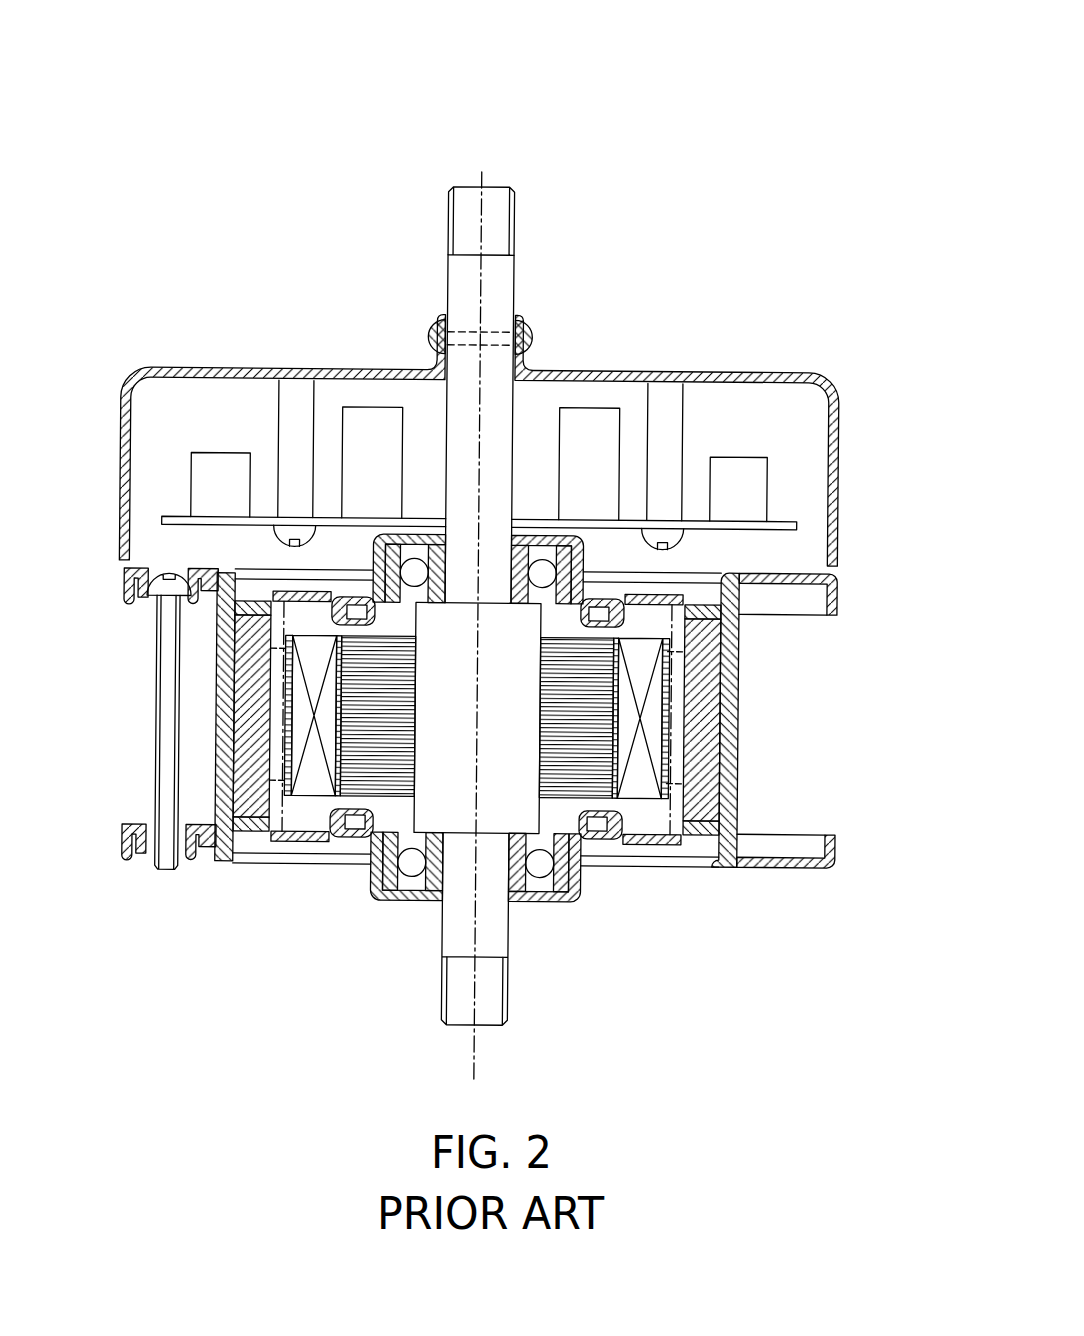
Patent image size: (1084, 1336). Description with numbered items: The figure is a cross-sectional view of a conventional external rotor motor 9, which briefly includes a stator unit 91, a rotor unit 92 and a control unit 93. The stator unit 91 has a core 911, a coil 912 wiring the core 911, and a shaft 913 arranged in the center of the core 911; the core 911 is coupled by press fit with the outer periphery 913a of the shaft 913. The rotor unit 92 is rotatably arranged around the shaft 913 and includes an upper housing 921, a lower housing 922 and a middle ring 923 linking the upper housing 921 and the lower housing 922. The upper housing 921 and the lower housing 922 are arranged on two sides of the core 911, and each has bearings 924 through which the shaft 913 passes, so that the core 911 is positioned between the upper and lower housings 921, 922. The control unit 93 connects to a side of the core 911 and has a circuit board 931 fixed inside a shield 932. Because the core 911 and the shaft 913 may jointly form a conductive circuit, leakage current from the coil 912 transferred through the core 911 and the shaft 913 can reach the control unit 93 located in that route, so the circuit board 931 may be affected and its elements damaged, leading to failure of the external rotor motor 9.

The external rotor motor 9 is at (243, 85).
The stator unit 91 is at (422, 164).
The shaft 913 is at (511, 213).
The outer periphery of the shaft 913a is at (410, 760).
The rotor unit 92 is at (204, 913).
The upper housing 921 is at (827, 577).
The lower housing 922 is at (797, 862).
The middle ring 923 is at (728, 731).
The bearings 924 is at (565, 548).
The core 911 is at (578, 789).
The coil 912 is at (641, 792).
The control unit 93 is at (793, 346).
The circuit board 931 is at (691, 520).
The shield 932 is at (632, 376).